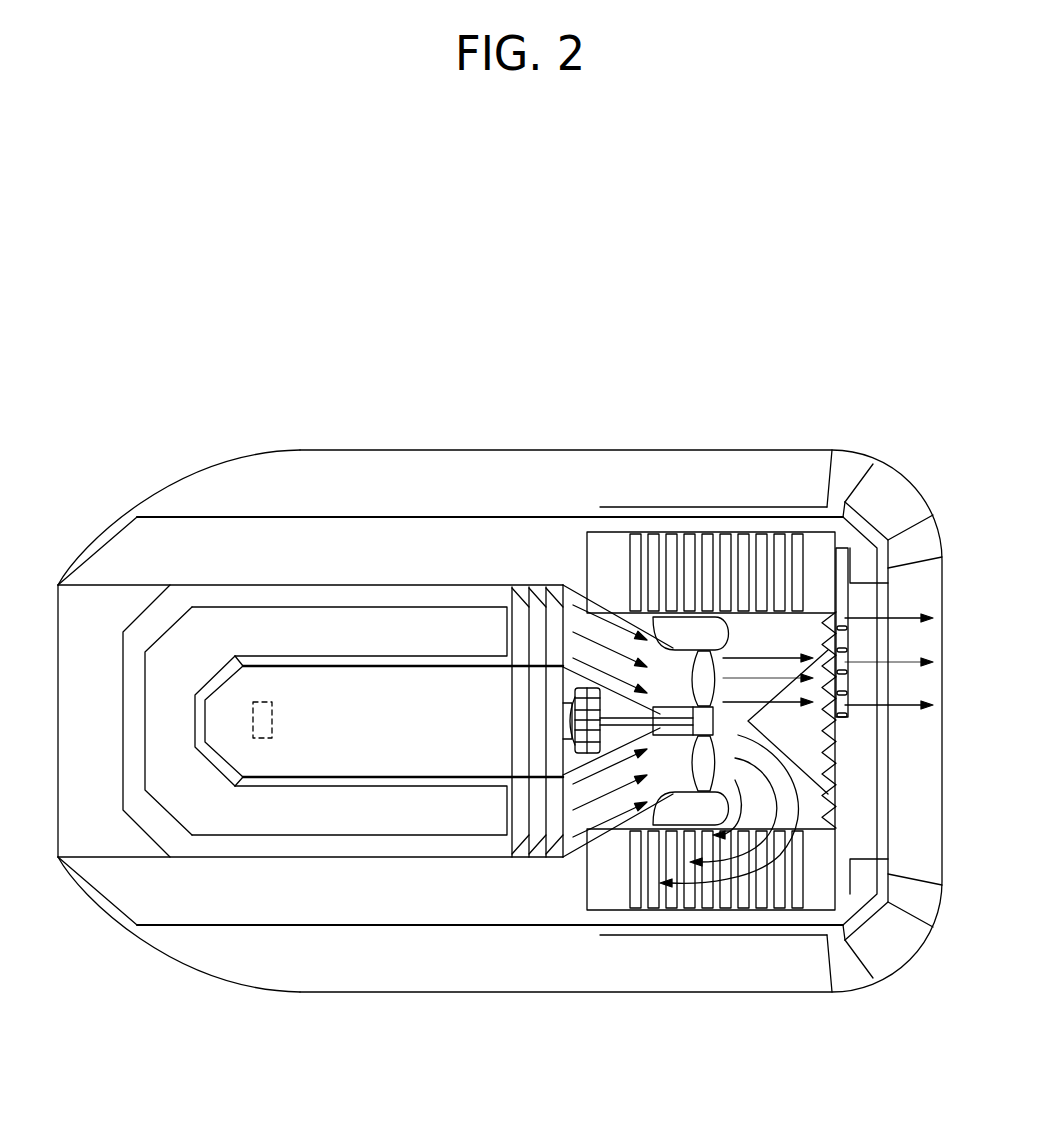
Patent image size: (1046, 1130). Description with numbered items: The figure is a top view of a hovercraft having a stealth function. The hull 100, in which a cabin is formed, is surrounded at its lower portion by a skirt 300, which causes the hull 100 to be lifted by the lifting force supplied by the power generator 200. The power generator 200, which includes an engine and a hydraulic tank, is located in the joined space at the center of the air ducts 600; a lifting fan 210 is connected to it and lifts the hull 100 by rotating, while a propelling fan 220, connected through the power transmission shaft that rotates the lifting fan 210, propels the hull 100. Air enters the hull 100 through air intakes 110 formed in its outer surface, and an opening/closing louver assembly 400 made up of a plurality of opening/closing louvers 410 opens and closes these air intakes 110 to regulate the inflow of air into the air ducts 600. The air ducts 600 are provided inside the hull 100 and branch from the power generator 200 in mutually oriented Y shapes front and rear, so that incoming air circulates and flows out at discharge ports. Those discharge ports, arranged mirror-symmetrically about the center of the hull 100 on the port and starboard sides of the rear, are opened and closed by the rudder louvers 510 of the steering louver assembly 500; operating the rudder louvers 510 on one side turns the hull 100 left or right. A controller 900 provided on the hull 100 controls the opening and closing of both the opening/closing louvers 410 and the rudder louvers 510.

The hull 100 is at (198, 548).
The air intake 110 is at (550, 640).
The power generator 200 is at (721, 724).
The lifting fan 210 is at (585, 720).
The propelling fan 220 is at (703, 673).
The skirt 300 is at (340, 963).
The opening/closing louver assembly 400 is at (511, 724).
The opening/closing louver 410 is at (522, 817).
The steering louver assembly 500 is at (711, 724).
The rudder louver 510 is at (688, 890).
The air duct 600 is at (653, 630).
The controller 900 is at (275, 718).